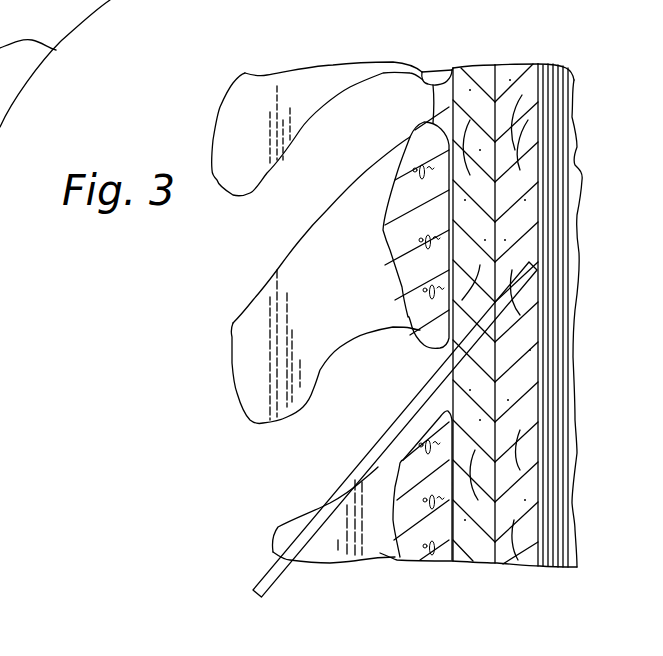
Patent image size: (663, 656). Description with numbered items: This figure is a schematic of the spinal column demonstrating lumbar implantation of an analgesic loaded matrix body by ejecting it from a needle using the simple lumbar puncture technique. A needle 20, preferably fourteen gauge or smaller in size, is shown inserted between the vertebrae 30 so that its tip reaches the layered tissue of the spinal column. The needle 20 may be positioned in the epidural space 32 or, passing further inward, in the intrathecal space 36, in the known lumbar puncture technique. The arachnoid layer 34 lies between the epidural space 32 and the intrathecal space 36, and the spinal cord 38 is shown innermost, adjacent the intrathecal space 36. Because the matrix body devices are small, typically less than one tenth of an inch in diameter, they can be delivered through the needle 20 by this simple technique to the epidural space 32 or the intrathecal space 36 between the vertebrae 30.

The needle 20 is at (397, 420).
The vertebrae 30 is at (228, 118).
The epidural space 32 is at (470, 566).
The arachnoid layer 34 is at (478, 68).
The intrathecal space 36 is at (512, 564).
The spinal cord 38 is at (568, 153).